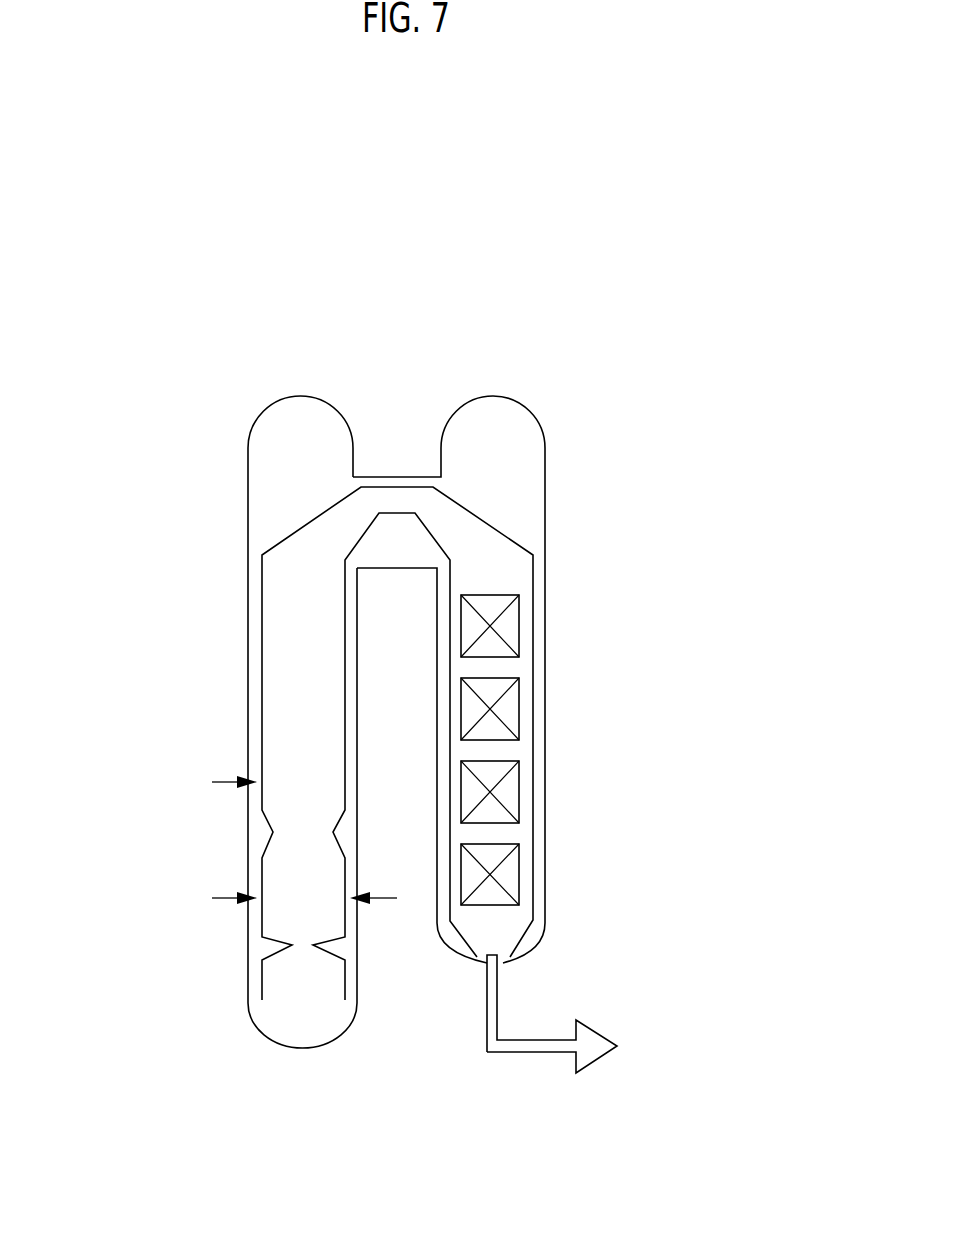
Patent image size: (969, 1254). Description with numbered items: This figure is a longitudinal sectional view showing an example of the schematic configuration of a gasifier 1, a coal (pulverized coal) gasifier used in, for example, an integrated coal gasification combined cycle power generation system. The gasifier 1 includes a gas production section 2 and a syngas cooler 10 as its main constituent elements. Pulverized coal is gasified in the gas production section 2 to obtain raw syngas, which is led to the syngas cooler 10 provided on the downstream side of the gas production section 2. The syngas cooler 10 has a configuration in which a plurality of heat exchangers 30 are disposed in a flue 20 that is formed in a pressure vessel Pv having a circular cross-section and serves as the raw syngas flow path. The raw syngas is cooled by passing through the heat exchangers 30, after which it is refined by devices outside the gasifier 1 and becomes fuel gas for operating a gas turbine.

The gasifier 1 is at (578, 275).
The gas production section 2 is at (346, 389).
The syngas cooler 10 is at (578, 390).
The pressure vessel Pv is at (546, 478).
The flue 20 is at (557, 580).
The heat exchanger 30 is at (519, 627).